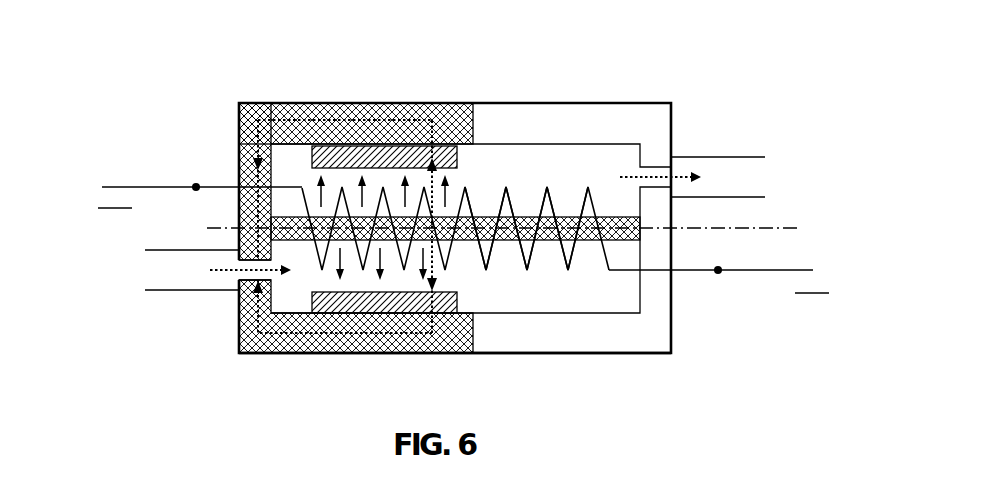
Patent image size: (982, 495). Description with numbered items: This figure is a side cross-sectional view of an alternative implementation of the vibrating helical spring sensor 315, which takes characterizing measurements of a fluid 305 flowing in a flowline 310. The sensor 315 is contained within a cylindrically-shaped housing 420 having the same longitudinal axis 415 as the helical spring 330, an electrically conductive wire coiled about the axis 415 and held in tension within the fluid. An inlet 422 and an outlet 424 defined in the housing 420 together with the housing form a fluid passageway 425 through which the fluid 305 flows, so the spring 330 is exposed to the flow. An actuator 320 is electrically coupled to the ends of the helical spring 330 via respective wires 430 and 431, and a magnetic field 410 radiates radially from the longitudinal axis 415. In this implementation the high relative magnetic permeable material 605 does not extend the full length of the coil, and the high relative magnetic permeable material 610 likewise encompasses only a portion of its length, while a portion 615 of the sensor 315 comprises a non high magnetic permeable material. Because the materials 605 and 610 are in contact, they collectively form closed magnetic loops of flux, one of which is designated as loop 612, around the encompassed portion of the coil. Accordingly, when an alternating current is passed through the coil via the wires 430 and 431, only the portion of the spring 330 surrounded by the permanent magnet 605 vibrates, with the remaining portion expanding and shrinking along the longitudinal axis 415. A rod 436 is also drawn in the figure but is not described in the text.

The fluid 305 is at (220, 267).
The flowline 310 is at (757, 155).
The helical spring sensor 315 is at (587, 421).
The actuator 320 is at (462, 227).
The helical spring 330 is at (342, 187).
The magnetic field 410 is at (430, 160).
The longitudinal axis 415 is at (778, 223).
The housing 420 is at (488, 353).
The inlet 422 is at (245, 284).
The outlet 424 is at (665, 167).
The fluid passageway 425 is at (578, 281).
The wire 430 is at (160, 187).
The wire 431 is at (745, 270).
The rod 436 is at (630, 242).
The high relative magnetic permeable material 605 is at (355, 313).
The high relative magnetic permeable material 610 is at (462, 103).
The closed magnetic loop 612 is at (239, 353).
The portion of non high magnetic permeable material 615 is at (575, 112).